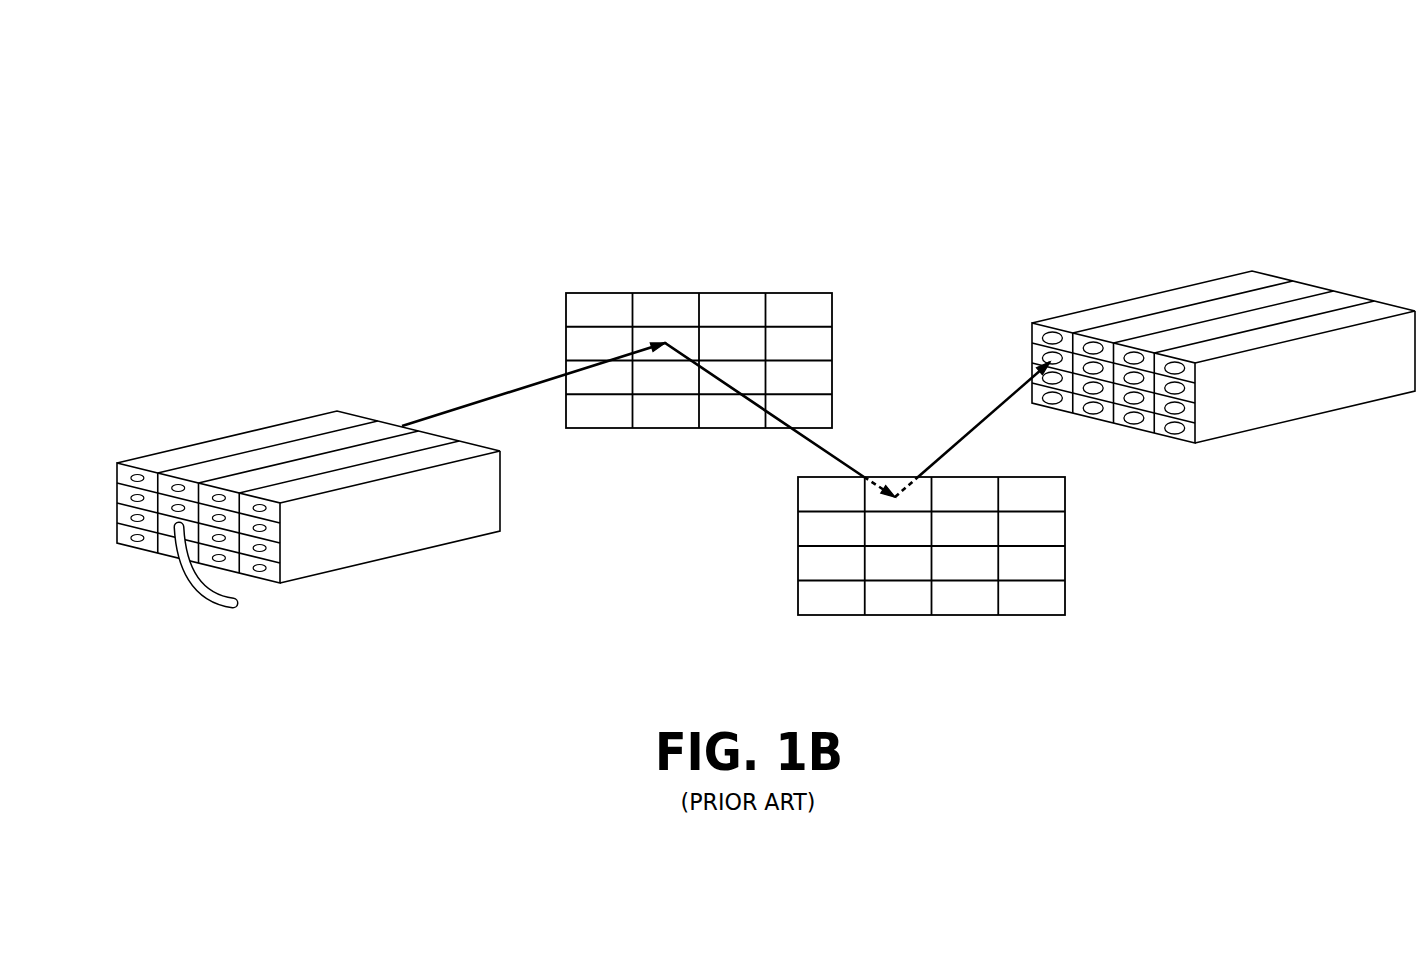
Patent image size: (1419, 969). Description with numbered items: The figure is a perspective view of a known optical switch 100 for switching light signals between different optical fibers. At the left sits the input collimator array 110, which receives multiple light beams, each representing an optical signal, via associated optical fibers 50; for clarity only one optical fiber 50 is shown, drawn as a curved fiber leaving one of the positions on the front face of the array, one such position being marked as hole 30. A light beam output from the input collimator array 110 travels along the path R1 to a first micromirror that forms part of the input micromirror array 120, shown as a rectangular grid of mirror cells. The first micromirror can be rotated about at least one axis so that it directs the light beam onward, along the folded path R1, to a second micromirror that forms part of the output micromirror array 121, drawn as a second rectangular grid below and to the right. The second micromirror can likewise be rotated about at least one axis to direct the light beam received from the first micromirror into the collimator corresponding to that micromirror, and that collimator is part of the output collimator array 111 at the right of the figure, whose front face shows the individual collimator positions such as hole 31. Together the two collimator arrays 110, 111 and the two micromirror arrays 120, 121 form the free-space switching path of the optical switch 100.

The optical switch 100 is at (915, 140).
The input collimator array 110 is at (233, 428).
The output collimator array 111 is at (1145, 292).
The input fiber hole 30 is at (263, 548).
The output fiber hole 31 is at (1138, 435).
The optical fiber 50 is at (218, 607).
The input micromirror array 120 is at (615, 292).
The output micromirror array 121 is at (782, 565).
The light beam path R1 is at (542, 382).